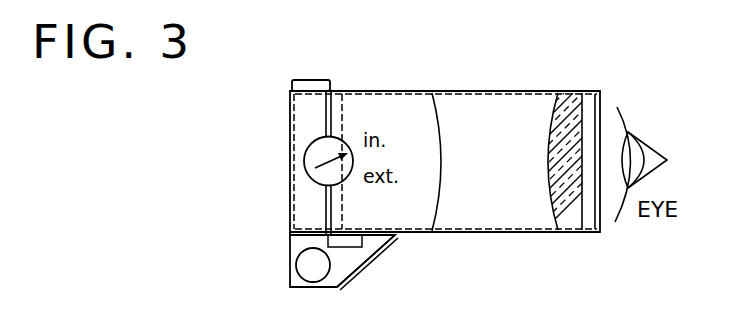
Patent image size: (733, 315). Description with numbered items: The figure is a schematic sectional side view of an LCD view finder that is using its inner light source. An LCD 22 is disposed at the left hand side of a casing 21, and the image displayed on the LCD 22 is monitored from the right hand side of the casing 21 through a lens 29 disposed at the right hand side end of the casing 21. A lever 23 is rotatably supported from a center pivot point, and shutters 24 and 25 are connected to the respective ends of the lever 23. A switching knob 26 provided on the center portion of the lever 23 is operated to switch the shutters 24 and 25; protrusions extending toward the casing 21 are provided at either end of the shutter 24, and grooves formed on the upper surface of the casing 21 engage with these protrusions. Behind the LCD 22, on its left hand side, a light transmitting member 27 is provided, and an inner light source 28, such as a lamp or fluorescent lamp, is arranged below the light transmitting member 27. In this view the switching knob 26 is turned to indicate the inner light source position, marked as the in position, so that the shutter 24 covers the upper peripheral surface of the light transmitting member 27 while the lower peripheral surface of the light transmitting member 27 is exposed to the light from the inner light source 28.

The casing 21 is at (488, 91).
The LCD 22 is at (338, 106).
The lever 23 is at (323, 210).
The shutter 24 is at (310, 80).
The shutter 25 is at (367, 257).
The switching knob 26 is at (312, 143).
The light transmitting member 27 is at (298, 175).
The inner light source 28 is at (310, 267).
The lens 29 is at (563, 112).